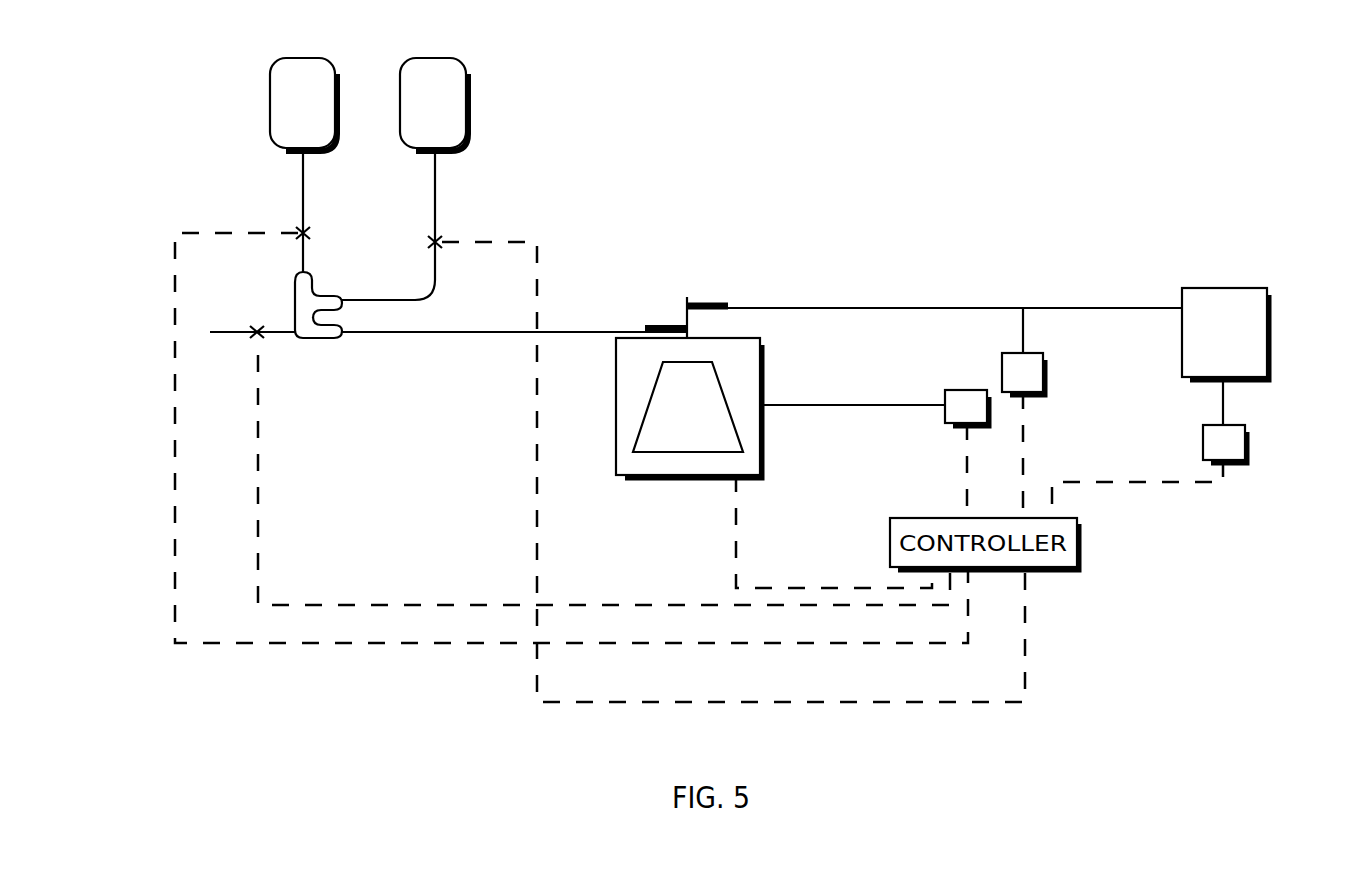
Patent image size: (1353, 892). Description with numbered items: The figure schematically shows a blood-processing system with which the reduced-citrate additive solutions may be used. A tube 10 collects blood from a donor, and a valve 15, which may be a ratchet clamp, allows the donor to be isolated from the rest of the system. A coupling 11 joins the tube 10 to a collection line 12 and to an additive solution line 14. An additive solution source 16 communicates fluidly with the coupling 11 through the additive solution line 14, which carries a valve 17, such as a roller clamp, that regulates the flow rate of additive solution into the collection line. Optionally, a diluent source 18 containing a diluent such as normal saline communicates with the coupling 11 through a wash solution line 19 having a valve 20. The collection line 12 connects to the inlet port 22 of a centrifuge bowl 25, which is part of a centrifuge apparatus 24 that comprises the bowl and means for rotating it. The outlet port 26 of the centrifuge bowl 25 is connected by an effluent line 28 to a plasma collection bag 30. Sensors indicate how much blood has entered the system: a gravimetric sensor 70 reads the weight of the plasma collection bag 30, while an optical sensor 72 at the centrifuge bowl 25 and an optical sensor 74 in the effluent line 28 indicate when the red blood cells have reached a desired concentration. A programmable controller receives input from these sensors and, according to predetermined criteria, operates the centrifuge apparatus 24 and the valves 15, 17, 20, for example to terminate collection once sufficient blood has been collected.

The tube 10 is at (242, 332).
The coupling 11 is at (317, 340).
The collection line 12 is at (443, 334).
The additive solution line 14 is at (436, 186).
The valve 15 is at (257, 338).
The additive solution source 16 is at (468, 88).
The valve 17 is at (441, 244).
The diluent source 18 is at (270, 93).
The wash solution line 19 is at (305, 183).
The valve 20 is at (300, 233).
The inlet port 22 is at (652, 324).
The centrifuge apparatus 24 is at (764, 441).
The centrifuge bowl 25 is at (721, 388).
The outlet port 26 is at (721, 300).
The effluent line 28 is at (878, 308).
The plasma collection bag 30 is at (1270, 328).
The gravimetric sensor 70 is at (1247, 445).
The optical sensor 72 is at (966, 390).
The optical sensor 74 is at (1046, 375).